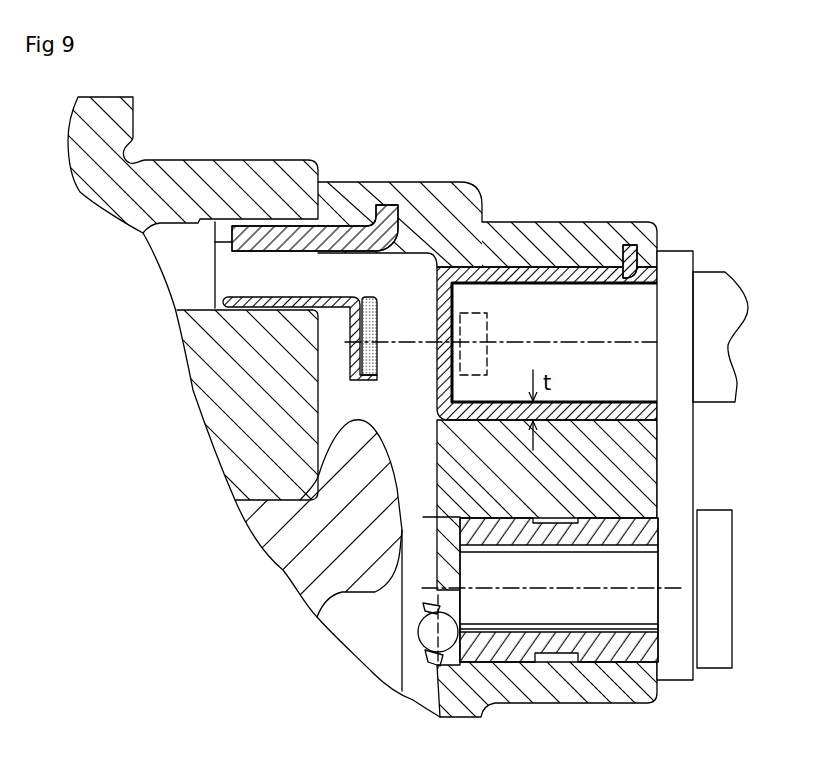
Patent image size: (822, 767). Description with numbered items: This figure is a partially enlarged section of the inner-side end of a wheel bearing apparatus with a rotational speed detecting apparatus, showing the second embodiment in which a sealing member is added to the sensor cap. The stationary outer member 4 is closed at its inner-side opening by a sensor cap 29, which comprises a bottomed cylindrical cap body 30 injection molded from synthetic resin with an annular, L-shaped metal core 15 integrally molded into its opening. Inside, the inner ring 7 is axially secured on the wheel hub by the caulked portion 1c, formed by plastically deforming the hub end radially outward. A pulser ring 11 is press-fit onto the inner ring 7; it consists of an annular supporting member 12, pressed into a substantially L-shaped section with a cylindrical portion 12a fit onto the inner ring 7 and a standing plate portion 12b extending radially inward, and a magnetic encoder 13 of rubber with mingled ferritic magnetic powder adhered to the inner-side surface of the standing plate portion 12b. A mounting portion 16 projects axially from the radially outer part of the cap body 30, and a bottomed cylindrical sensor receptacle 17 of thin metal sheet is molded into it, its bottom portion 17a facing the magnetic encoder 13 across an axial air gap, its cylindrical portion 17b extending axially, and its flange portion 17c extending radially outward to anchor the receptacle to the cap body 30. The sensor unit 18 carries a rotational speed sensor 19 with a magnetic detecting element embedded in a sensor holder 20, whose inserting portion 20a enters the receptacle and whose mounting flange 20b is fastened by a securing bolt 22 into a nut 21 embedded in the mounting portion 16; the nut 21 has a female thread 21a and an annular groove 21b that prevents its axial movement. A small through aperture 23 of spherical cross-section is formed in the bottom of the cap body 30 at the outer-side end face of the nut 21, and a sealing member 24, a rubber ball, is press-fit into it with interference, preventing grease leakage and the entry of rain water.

The outer member 4 is at (198, 175).
The caulked portion 1c is at (367, 442).
The inner ring 7 is at (208, 345).
The pulser ring 11 is at (218, 353).
The annular supporting member 12 is at (239, 375).
The cylindrical portion 12a is at (312, 302).
The standing plate portion 12b is at (355, 378).
The magnetic encoder 13 is at (325, 415).
The sensor cap 29 is at (444, 176).
The metal core 15 is at (350, 212).
The cap body 30 is at (435, 200).
The sensor receptacle 17 is at (547, 434).
The bottom portion 17a is at (470, 262).
The cylindrical portion 17b is at (533, 261).
The flange portion 17c is at (623, 251).
The mounting portion 16 is at (650, 285).
The rotational speed sensor 19 is at (487, 322).
The sensor holder 20 is at (690, 414).
The inserting portion 20a is at (677, 277).
The mounting flange 20b is at (673, 273).
The sensor unit 18 is at (719, 253).
The securing bolt 22 is at (717, 520).
The nut 21 is at (552, 630).
The female thread 21a is at (538, 550).
The annular groove 21b is at (560, 657).
The sealing member 24 is at (430, 638).
The through aperture 23 is at (433, 662).